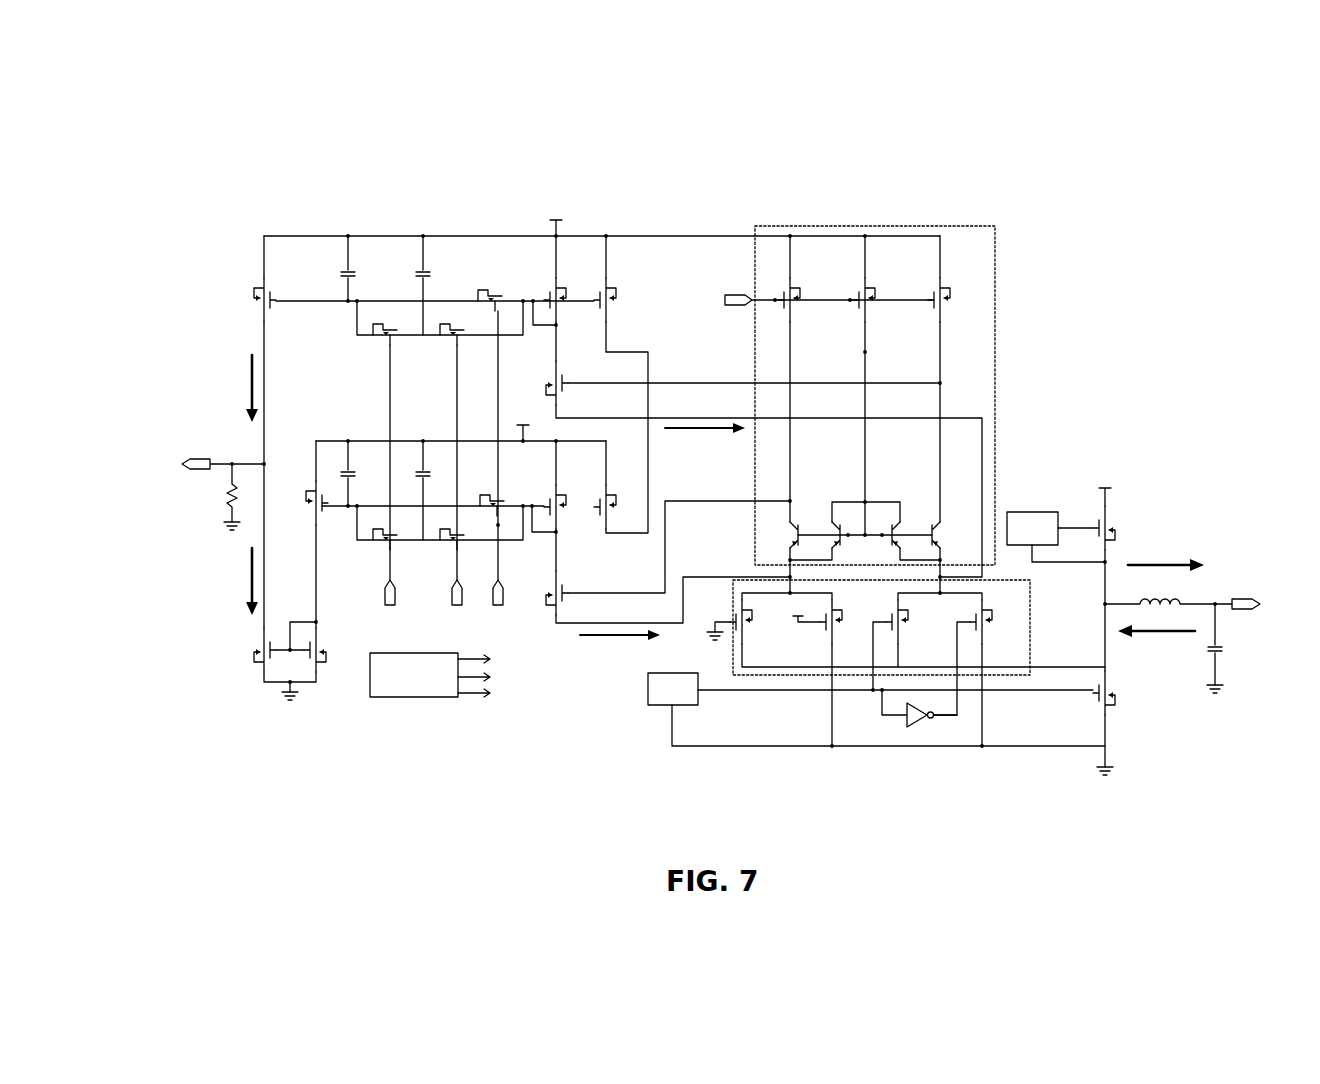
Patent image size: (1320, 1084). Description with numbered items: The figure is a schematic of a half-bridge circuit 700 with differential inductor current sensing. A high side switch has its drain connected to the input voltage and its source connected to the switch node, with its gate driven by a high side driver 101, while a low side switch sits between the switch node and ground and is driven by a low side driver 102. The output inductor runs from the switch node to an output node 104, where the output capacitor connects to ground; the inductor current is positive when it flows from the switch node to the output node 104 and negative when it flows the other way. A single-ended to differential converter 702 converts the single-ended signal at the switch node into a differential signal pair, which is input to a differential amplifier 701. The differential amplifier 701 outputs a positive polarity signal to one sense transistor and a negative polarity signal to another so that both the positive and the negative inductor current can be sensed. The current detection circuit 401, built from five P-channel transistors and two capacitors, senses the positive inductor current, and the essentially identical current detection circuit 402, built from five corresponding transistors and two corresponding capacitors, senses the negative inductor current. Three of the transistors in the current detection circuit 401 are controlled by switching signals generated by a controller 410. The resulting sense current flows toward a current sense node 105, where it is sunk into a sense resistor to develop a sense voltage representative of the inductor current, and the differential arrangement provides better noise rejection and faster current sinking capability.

The half-bridge circuit 700 is at (277, 194).
The differential amplifier 701 is at (995, 257).
The single-ended to differential converter 702 is at (1029, 634).
The current detection circuit 401 is at (365, 336).
The current detection circuit 402 is at (362, 423).
The controller 410 is at (442, 676).
The high side driver 101 is at (1010, 512).
The low side driver 102 is at (645, 690).
The output node 104 is at (1234, 601).
The current sense node 105 is at (196, 460).